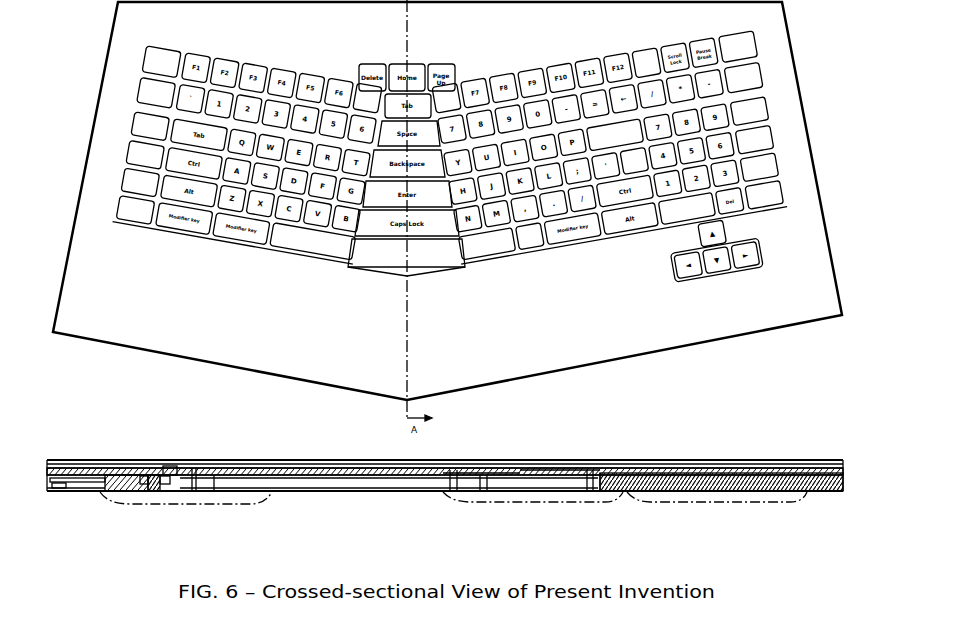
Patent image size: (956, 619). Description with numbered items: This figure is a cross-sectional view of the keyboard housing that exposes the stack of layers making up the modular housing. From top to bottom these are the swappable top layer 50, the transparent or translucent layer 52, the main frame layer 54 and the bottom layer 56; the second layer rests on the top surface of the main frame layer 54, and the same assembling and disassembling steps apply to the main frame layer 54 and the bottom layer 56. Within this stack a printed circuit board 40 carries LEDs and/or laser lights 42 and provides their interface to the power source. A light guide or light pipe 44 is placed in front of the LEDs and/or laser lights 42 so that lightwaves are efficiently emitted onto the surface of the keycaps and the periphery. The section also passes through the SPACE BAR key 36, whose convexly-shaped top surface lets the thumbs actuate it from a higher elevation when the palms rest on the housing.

The SPACE BAR key 36 is at (549, 474).
The printed circuit board 40 is at (156, 474).
The LEDs and/or laser lights 42 is at (146, 476).
The light guide or light pipe 44 is at (177, 467).
The swappable top layer 50 is at (650, 463).
The transparent or translucent layer 52 is at (703, 470).
The main frame layer 54 is at (783, 478).
The bottom layer 56 is at (803, 492).